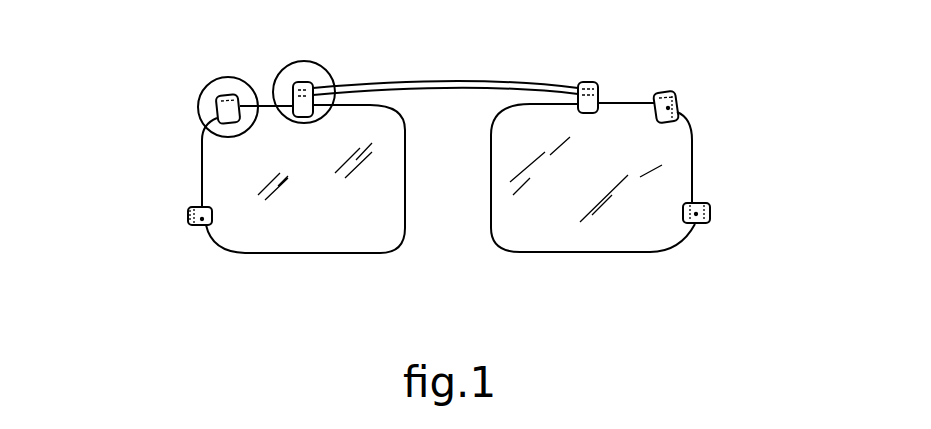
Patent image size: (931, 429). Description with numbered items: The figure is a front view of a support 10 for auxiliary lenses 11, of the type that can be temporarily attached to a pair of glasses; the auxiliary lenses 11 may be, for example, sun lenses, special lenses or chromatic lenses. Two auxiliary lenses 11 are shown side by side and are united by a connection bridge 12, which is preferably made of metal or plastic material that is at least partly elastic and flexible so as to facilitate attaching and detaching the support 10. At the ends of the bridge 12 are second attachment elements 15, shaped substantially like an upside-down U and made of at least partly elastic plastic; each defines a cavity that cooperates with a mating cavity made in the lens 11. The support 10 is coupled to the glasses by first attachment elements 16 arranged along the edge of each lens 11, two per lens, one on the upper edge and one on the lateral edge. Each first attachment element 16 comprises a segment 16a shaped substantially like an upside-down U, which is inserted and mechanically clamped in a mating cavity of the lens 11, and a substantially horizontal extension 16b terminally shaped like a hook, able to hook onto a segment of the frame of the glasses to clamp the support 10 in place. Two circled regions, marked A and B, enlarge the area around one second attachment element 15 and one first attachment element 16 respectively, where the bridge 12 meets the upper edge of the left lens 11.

The support 10 is at (152, 86).
The auxiliary lenses 11 is at (350, 247).
The connection bridge 12 is at (421, 86).
The second attachment elements 15 is at (296, 78).
The first attachment elements 16 is at (227, 90).
The segment 16a is at (203, 227).
The extension 16b is at (190, 218).
The detail A is at (318, 63).
The detail B is at (212, 82).